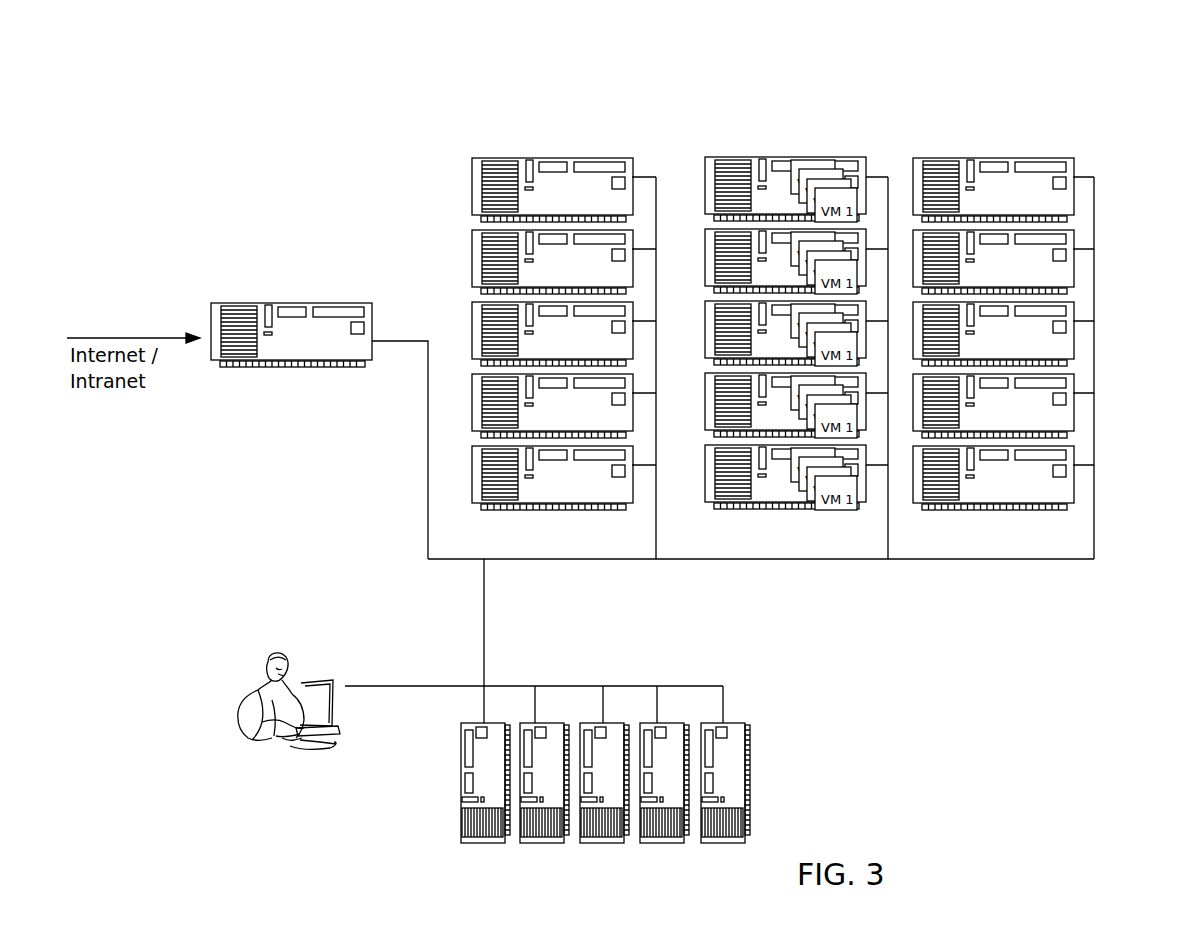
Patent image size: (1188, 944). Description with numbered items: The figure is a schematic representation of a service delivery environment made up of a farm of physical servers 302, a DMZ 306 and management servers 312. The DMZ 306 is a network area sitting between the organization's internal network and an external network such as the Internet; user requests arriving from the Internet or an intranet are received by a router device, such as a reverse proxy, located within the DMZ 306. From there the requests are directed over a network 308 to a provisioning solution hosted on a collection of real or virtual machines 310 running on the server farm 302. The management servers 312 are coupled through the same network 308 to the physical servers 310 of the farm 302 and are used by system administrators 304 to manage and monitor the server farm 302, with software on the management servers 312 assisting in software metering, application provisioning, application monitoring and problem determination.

The farm of physical servers 302 is at (503, 100).
The system administrator 304 is at (262, 686).
The DMZ (demilitarized zone) 306 is at (283, 303).
The network 308 is at (756, 561).
The real or virtual machines 310 is at (472, 198).
The management servers 312 is at (461, 778).